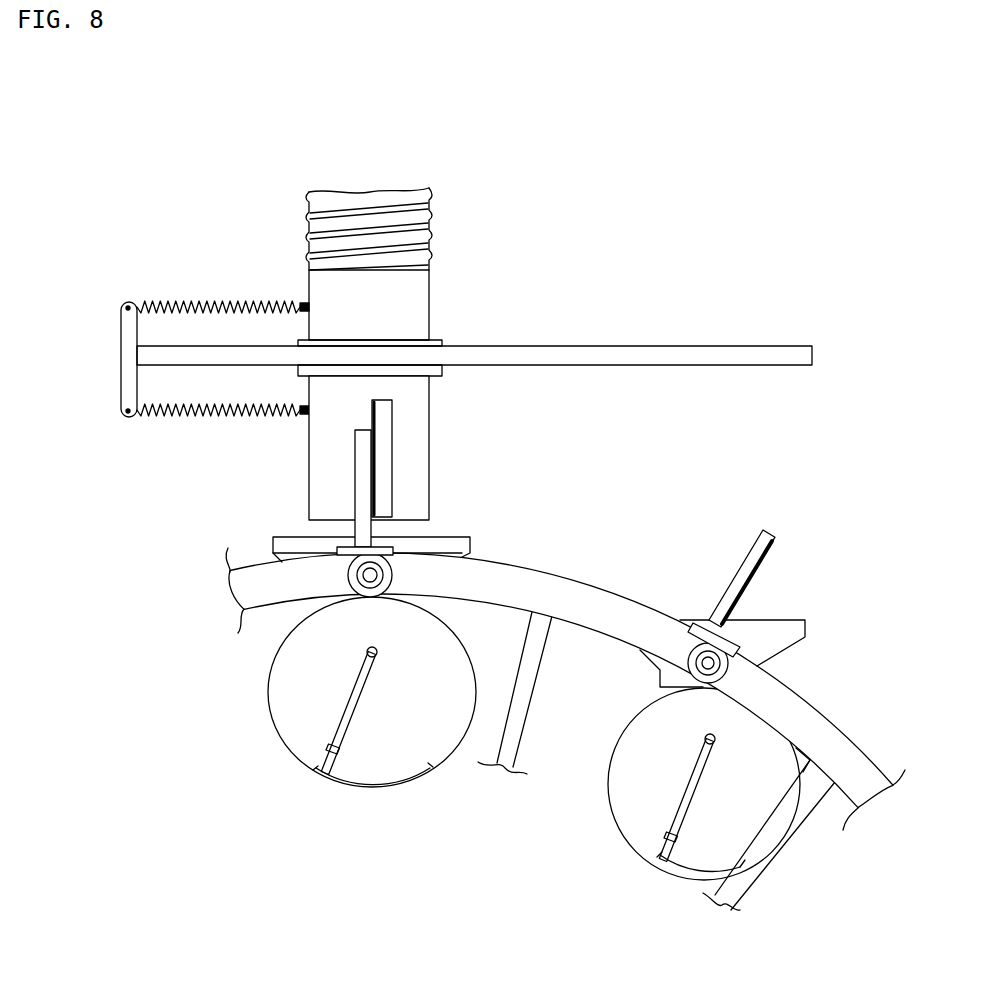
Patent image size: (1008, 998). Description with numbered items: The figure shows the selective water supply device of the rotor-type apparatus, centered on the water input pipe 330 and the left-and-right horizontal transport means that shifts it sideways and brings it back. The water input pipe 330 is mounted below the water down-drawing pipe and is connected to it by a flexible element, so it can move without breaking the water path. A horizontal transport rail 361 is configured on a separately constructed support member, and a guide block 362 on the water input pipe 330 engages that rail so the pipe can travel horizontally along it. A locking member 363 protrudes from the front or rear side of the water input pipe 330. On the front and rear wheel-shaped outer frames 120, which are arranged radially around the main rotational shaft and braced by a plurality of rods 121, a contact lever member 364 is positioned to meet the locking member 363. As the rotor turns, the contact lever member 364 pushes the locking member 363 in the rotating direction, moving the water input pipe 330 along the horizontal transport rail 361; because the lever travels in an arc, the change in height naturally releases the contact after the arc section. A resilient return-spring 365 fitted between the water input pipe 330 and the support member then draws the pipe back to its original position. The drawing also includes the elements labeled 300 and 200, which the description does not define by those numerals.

The rail device 300 is at (605, 221).
The water input pipe 330 is at (432, 443).
The horizontal transport rail 361 is at (170, 357).
The guide block 362 is at (430, 335).
The locking member 363 is at (383, 472).
The contact lever member 364 is at (362, 482).
The resilient return-spring 365 is at (196, 302).
The outer frame 120 is at (580, 590).
The rod 121 is at (523, 697).
The wheel 200 is at (290, 683).